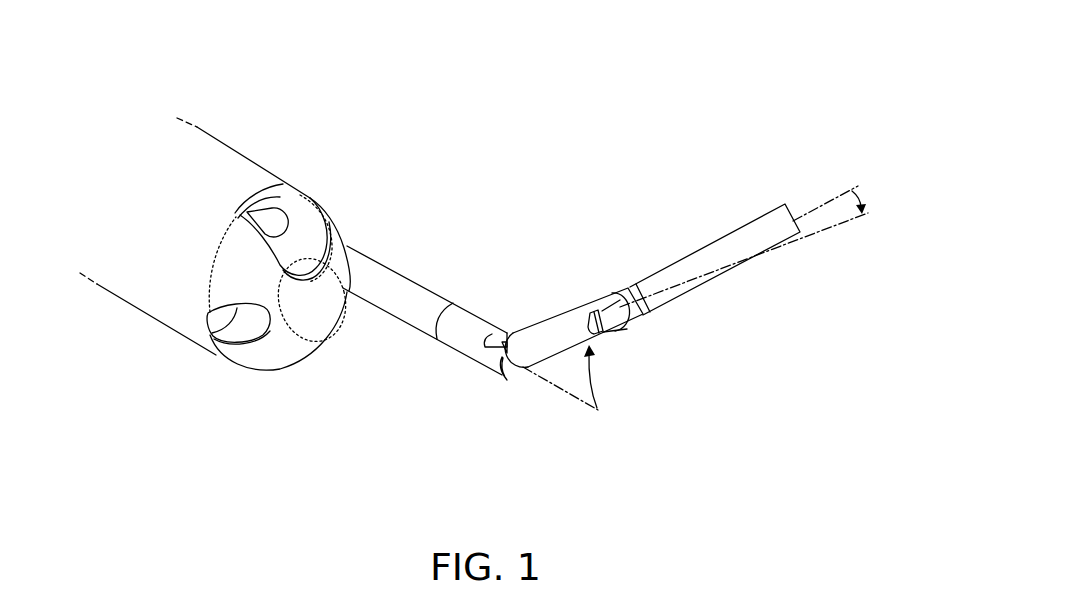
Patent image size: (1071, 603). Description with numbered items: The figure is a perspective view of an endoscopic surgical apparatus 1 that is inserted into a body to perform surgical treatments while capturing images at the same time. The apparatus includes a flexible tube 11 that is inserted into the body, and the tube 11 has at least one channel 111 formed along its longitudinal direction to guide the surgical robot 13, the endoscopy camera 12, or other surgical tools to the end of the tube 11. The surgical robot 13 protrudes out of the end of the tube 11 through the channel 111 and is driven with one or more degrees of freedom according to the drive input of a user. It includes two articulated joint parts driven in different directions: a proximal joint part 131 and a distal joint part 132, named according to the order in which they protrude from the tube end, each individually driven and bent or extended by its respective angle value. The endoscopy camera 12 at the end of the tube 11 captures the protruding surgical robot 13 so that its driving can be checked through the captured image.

The endoscopic surgical apparatus 1 is at (829, 49).
The tube 11 is at (217, 162).
The channel 111 is at (293, 250).
The endoscopy camera 12 is at (282, 212).
The surgical robot 13 is at (568, 195).
The proximal joint part 131 is at (497, 357).
The distal joint part 132 is at (618, 307).